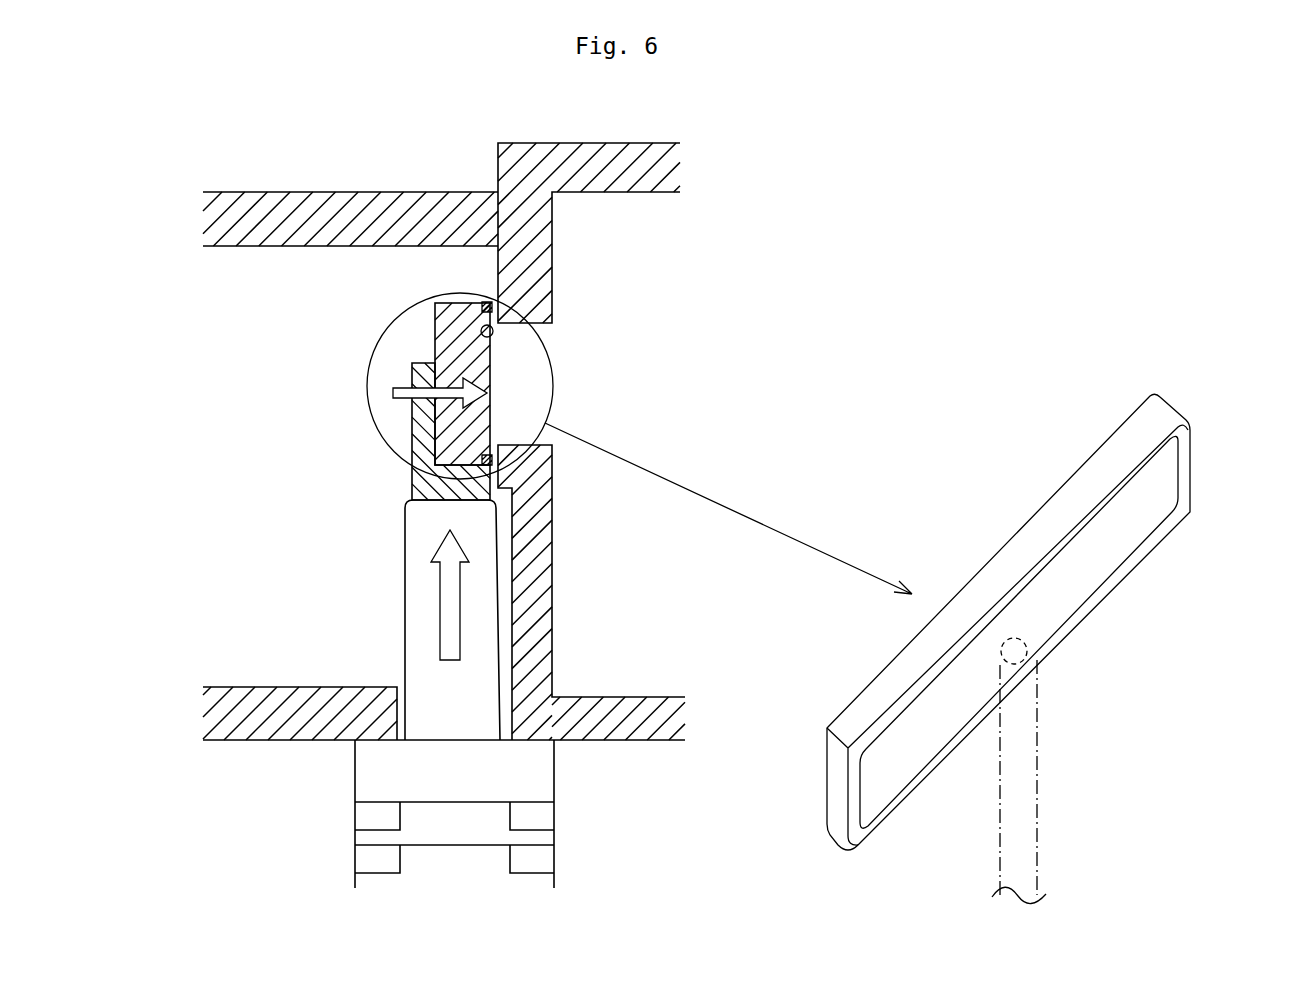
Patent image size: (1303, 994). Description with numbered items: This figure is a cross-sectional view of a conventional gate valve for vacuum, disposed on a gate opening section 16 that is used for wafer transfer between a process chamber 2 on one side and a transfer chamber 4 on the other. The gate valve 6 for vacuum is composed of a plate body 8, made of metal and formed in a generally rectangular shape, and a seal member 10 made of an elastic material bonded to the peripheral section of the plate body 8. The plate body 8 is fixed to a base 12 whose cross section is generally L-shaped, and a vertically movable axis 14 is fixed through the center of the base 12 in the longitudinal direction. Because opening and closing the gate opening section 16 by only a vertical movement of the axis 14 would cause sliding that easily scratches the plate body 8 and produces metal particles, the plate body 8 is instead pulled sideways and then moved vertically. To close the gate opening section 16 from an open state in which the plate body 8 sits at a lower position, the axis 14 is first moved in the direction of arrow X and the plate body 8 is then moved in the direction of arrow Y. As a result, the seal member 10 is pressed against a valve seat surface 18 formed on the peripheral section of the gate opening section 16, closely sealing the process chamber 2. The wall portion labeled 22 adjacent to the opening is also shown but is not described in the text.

The process chamber 2 is at (699, 355).
The transfer chamber 4 is at (299, 355).
The gate valve for vacuum 6 is at (564, 344).
The plate body 8 is at (445, 345).
The seal member 10 is at (490, 305).
The base 12 is at (412, 462).
The axis 14 is at (408, 590).
The gate opening section 16 is at (498, 447).
The valve seat surface 18 is at (490, 345).
The partition wall 22 is at (538, 276).